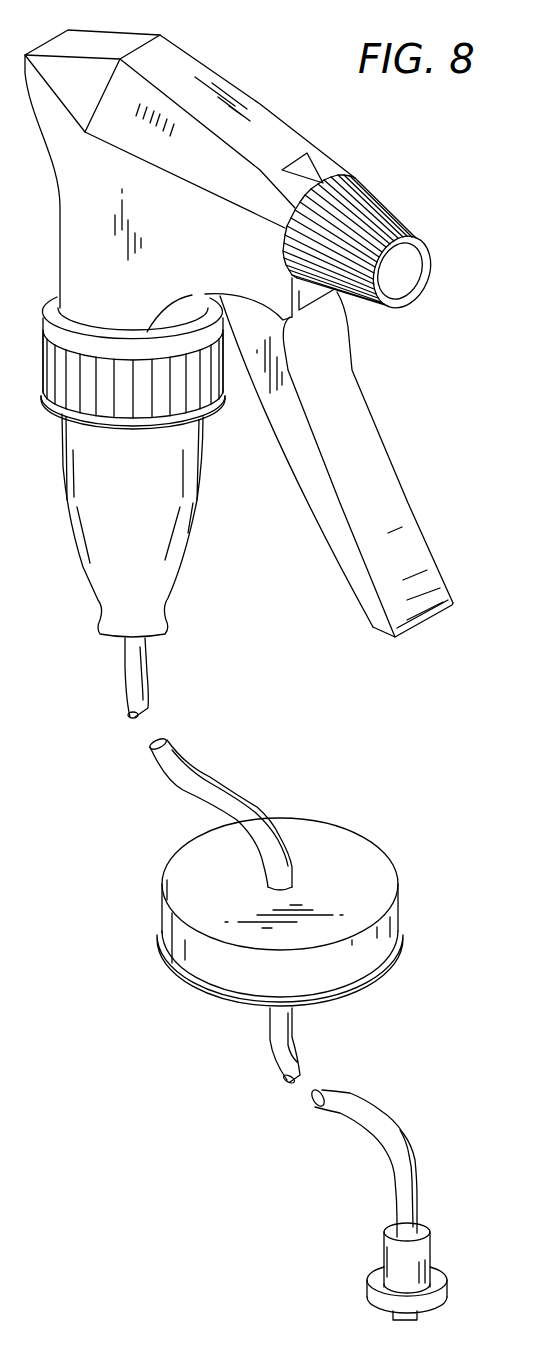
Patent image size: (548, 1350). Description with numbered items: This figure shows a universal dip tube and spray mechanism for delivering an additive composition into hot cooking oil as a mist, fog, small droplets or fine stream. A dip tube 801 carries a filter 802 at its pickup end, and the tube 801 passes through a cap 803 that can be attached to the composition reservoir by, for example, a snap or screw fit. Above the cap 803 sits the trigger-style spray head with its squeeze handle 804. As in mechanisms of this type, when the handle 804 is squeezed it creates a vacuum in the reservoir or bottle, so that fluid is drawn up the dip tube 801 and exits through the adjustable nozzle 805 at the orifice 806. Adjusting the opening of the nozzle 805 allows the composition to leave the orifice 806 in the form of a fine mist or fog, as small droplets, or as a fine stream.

The tube 801 is at (404, 1130).
The filter 802 is at (447, 1293).
The cap 803 is at (400, 907).
The handle 804 is at (395, 480).
The adjustable nozzle 805 is at (387, 210).
The orifice 806 is at (393, 268).